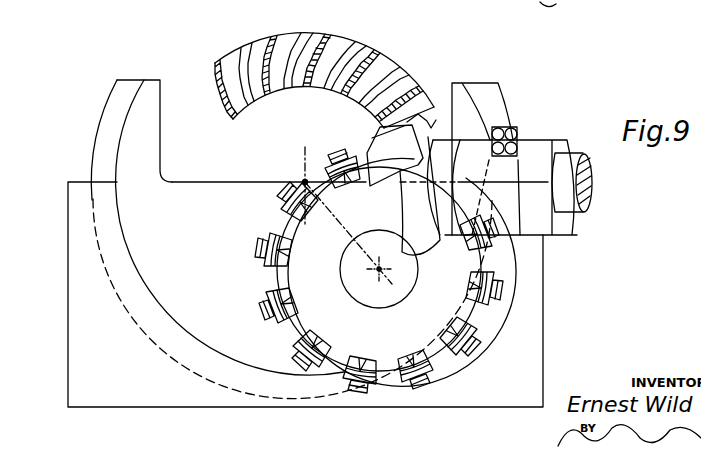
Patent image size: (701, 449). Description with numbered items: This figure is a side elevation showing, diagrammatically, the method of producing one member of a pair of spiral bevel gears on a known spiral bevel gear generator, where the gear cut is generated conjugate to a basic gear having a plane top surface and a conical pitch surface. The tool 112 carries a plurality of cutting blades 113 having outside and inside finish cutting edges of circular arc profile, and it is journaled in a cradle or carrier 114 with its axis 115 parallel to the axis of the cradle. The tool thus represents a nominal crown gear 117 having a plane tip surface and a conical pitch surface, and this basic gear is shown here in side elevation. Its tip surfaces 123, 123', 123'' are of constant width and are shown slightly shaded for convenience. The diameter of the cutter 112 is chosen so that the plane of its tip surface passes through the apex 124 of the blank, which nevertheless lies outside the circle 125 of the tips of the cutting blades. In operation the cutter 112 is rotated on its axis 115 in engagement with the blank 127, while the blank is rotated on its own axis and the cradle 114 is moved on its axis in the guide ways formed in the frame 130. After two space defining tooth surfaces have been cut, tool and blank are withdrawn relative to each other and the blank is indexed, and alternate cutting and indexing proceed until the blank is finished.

The tool 112 is at (275, 277).
The cutting blades 113 is at (275, 327).
The cradle or carrier 114 is at (97, 142).
The axis of the tool 115 is at (381, 275).
The nominal crown gear 117 is at (412, 85).
The tip surface 123 is at (324, 69).
The tip surface 123' is at (343, 50).
The tip surface 123'' is at (389, 78).
The apex of the blank 124 is at (304, 181).
The circle of the tips of the cutting blades 125 is at (279, 222).
The blank 127 is at (432, 250).
The frame 130 is at (533, 350).